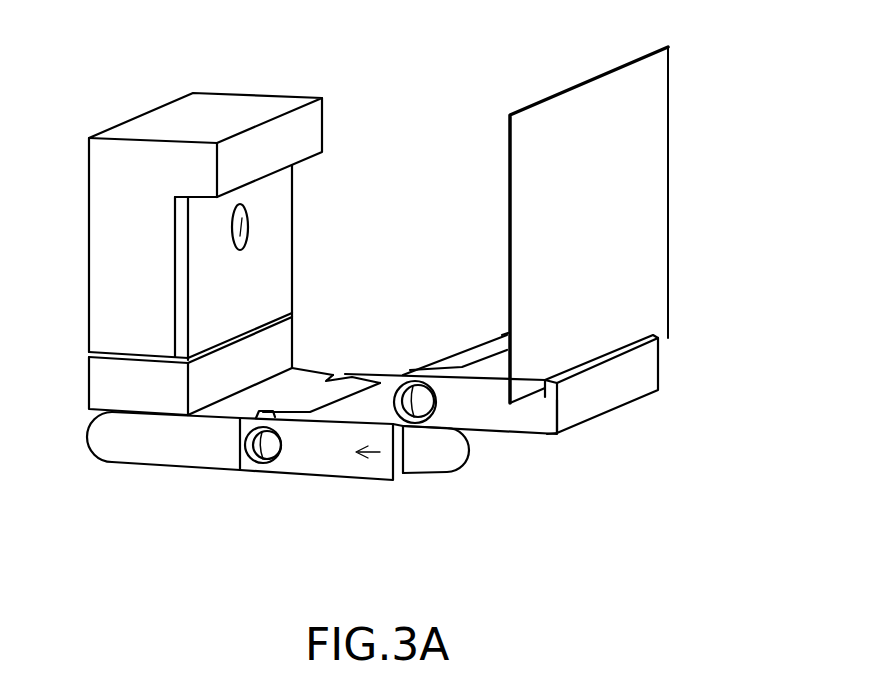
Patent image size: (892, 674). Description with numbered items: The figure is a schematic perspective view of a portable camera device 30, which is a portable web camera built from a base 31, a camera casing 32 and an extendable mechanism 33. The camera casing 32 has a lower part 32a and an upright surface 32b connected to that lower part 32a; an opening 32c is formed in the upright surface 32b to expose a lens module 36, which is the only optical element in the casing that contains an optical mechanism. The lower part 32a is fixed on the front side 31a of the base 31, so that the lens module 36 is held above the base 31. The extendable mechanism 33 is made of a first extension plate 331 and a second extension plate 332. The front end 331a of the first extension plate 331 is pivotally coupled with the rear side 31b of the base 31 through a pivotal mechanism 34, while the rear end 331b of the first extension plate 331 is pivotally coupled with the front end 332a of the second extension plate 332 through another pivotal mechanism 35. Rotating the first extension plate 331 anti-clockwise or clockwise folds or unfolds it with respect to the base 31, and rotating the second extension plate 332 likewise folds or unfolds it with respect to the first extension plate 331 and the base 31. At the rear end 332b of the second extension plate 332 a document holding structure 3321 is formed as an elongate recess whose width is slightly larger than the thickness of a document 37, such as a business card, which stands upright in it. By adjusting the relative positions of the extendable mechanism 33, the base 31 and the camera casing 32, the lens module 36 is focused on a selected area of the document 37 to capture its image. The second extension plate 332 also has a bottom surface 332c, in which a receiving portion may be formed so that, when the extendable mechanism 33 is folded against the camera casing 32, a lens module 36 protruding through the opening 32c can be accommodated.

The portable camera device 30 is at (598, 30).
The base 31 is at (141, 479).
The front side of the base 31a is at (110, 450).
The rear side of the base 31b is at (225, 462).
The camera casing 32 is at (205, 273).
The lower part 32a is at (102, 387).
The upright surface 32b is at (280, 257).
The opening 32c is at (237, 205).
The extendable mechanism 33 is at (456, 460).
The first extension plate 331 is at (359, 473).
The front end of the first extension plate 331a is at (252, 468).
The rear end of the first extension plate 331b is at (443, 450).
The second extension plate 332 is at (485, 432).
The front end of the second extension plate 332a is at (457, 395).
The rear end of the second extension plate 332b is at (620, 388).
The bottom surface of the second extension plate 332c is at (532, 434).
The document holding structure 3321 is at (583, 420).
The pivotal mechanism 34 is at (273, 445).
The pivotal mechanism 35 is at (410, 390).
The lens module 36 is at (243, 225).
The document 37 is at (648, 190).